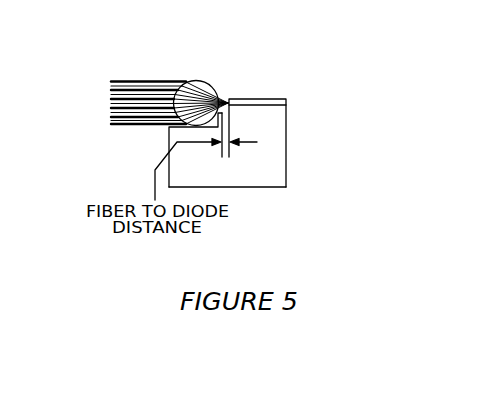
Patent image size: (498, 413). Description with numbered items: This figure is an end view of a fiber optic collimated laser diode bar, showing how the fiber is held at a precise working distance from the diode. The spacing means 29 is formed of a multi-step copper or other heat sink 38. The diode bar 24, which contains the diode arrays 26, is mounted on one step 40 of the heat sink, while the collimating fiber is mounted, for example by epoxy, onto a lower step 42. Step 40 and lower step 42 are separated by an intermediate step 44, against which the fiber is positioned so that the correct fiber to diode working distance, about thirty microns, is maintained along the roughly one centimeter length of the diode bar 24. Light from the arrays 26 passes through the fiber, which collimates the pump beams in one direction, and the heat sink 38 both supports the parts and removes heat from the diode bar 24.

The diode bar 24 is at (284, 96).
The arrays 26 is at (231, 100).
The spacing means 29 is at (272, 223).
The heat sink 38 is at (273, 180).
The step 40 is at (275, 108).
The lower step 42 is at (180, 130).
The intermediate step 44 is at (232, 123).